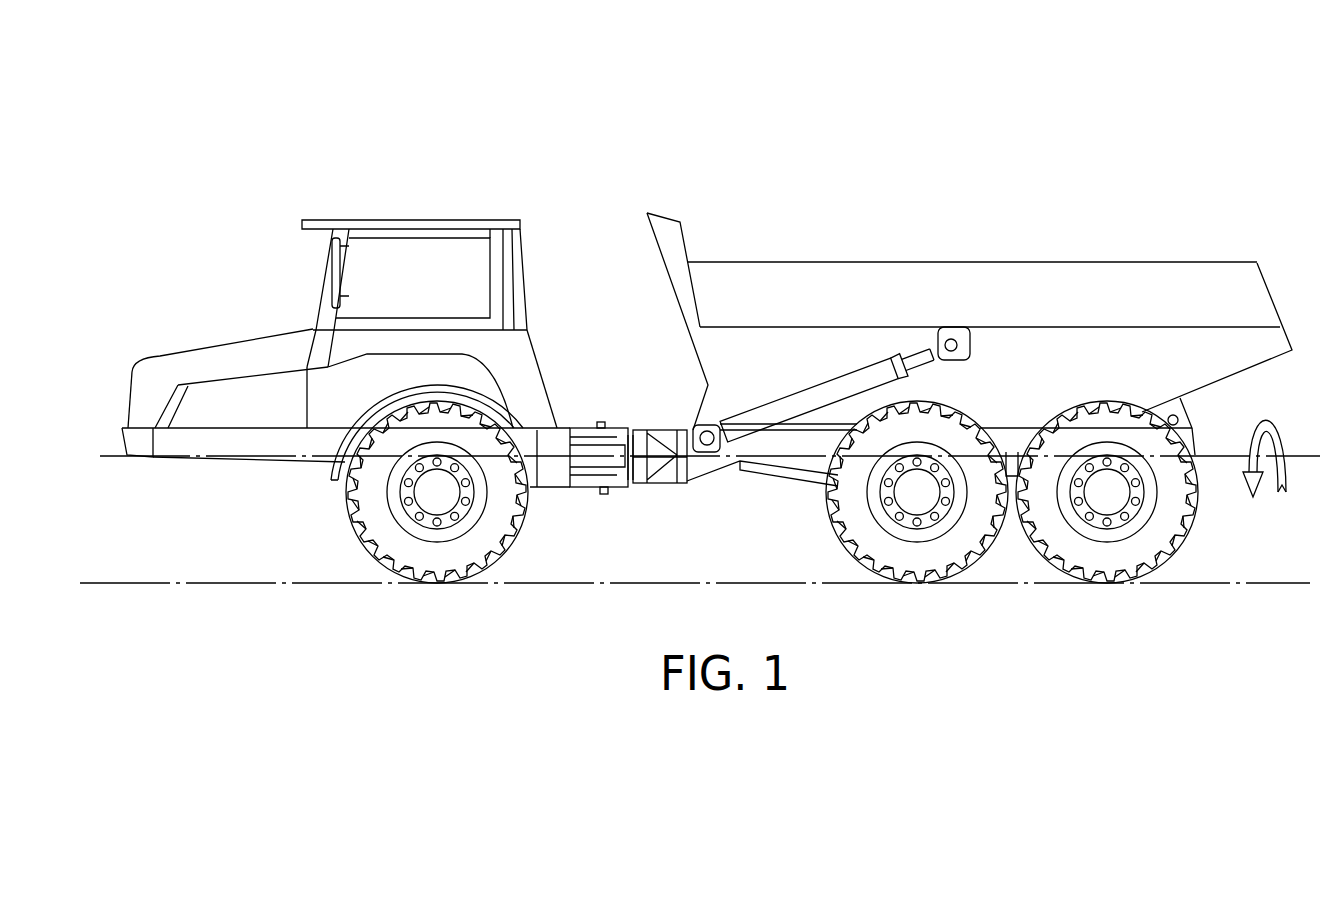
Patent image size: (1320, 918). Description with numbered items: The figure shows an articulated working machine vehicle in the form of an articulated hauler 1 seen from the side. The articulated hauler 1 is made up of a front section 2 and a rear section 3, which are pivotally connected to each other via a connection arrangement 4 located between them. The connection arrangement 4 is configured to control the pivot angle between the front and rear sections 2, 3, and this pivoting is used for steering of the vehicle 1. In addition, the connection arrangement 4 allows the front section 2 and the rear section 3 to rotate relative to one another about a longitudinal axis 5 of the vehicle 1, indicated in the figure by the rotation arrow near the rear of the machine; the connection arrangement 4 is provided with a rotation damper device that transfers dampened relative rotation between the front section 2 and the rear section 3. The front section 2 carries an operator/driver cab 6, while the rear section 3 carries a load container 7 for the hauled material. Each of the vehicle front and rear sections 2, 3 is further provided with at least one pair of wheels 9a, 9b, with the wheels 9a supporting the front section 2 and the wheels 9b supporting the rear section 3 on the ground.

The articulated hauler 1 is at (842, 80).
The front section 2 is at (508, 156).
The rear section 3 is at (1040, 203).
The connection arrangement 4 is at (625, 430).
The longitudinal axis 5 is at (1270, 485).
The operator/driver cab 6 is at (410, 277).
The load container 7 is at (910, 303).
The wheels 9a is at (428, 550).
The wheels 9b is at (1097, 550).